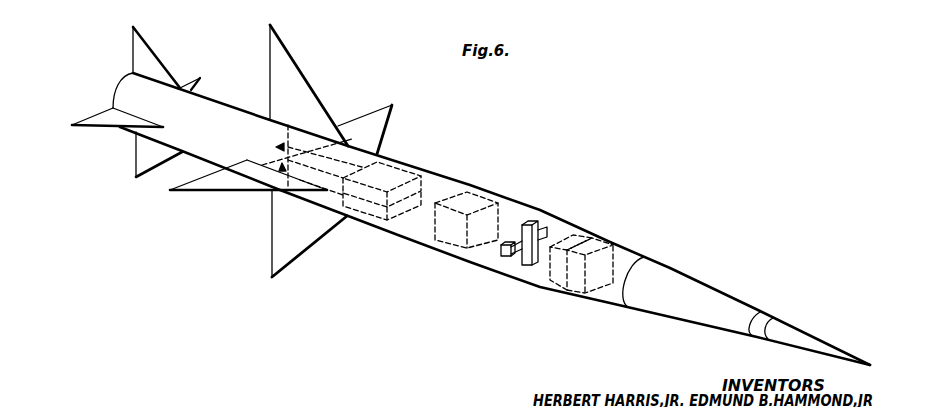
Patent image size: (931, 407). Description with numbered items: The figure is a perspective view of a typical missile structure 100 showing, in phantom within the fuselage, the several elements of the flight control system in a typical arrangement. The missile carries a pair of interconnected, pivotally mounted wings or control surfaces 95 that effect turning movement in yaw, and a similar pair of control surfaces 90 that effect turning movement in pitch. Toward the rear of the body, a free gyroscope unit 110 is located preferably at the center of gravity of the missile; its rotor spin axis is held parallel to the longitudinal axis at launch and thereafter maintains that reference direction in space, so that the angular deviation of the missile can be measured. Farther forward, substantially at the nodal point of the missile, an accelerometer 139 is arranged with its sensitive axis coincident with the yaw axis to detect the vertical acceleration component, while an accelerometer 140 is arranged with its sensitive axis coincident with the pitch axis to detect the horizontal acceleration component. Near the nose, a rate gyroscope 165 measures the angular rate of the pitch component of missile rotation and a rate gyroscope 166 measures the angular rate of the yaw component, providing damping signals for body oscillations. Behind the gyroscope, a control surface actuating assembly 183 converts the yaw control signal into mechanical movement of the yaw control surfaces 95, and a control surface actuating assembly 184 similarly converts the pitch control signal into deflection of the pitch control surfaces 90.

The pitch control surfaces 90 is at (373, 110).
The yaw control surfaces 95 is at (290, 65).
The missile structure 100 is at (630, 252).
The free gyroscope unit 110 is at (477, 195).
The accelerometer 139 is at (528, 222).
The accelerometer 140 is at (507, 250).
The rate gyroscope 165 is at (562, 288).
The rate gyroscope 166 is at (586, 294).
The control surface actuating assembly 183 is at (393, 170).
The control surface actuating assembly 184 is at (375, 203).